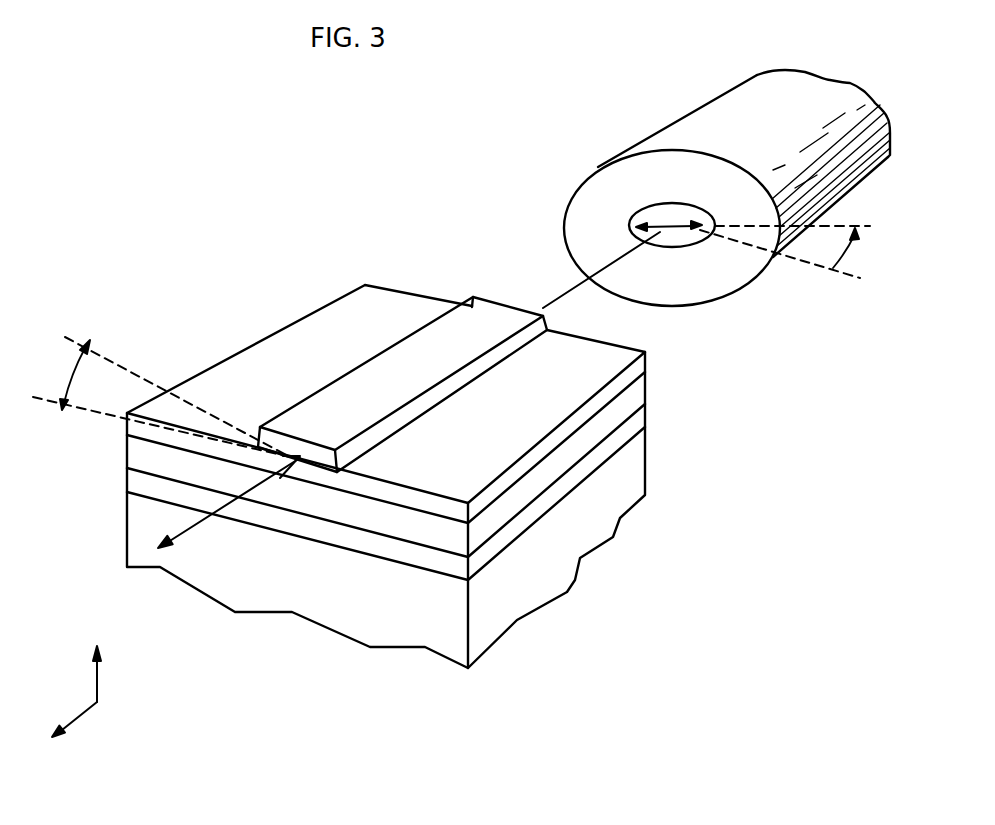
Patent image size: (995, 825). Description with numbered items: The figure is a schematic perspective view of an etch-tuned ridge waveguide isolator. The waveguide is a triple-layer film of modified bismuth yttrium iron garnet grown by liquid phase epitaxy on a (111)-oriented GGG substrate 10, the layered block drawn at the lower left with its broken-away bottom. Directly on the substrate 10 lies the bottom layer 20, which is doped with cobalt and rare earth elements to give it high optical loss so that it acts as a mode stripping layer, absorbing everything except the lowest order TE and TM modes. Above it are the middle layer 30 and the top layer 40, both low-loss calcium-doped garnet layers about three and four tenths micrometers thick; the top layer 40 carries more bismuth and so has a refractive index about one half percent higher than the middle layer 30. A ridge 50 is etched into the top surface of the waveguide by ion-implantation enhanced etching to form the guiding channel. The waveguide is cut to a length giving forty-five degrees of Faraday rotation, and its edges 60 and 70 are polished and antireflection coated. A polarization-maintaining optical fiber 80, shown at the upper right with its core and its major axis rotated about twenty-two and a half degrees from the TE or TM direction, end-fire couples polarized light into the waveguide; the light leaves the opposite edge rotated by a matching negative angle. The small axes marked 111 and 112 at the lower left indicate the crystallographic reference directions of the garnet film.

The GGG substrate 10 is at (645, 463).
The bottom layer 20 is at (645, 409).
The middle layer 30 is at (645, 386).
The top layer 40 is at (645, 363).
The ridge 50 is at (455, 327).
The edge 60 is at (300, 460).
The edge 70 is at (380, 289).
The polarization-maintaining optical fiber 80 is at (713, 105).
The vertical reference axis 111 is at (97, 681).
The horizontal reference axis 112 is at (84, 714).